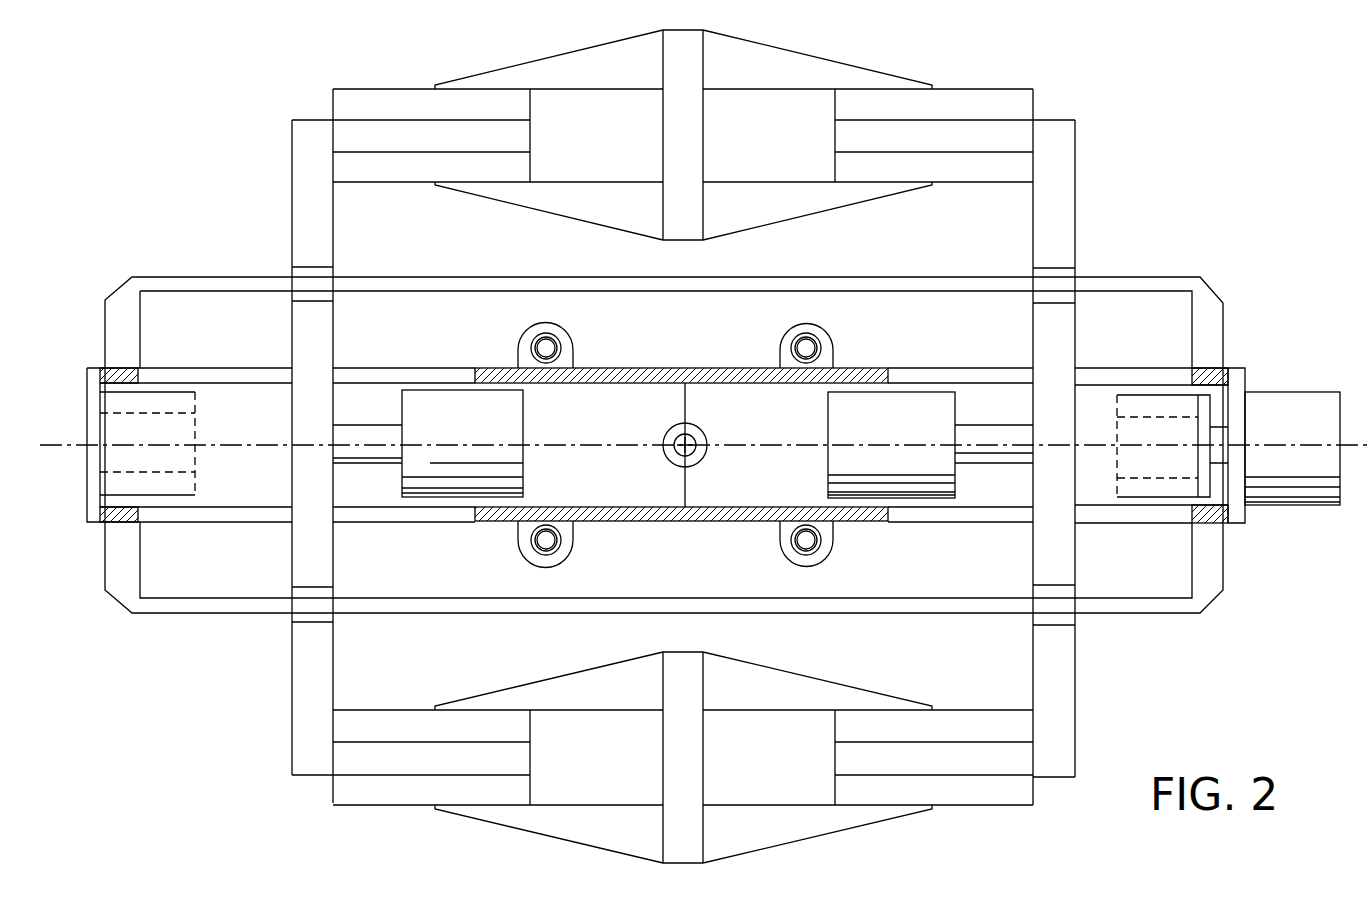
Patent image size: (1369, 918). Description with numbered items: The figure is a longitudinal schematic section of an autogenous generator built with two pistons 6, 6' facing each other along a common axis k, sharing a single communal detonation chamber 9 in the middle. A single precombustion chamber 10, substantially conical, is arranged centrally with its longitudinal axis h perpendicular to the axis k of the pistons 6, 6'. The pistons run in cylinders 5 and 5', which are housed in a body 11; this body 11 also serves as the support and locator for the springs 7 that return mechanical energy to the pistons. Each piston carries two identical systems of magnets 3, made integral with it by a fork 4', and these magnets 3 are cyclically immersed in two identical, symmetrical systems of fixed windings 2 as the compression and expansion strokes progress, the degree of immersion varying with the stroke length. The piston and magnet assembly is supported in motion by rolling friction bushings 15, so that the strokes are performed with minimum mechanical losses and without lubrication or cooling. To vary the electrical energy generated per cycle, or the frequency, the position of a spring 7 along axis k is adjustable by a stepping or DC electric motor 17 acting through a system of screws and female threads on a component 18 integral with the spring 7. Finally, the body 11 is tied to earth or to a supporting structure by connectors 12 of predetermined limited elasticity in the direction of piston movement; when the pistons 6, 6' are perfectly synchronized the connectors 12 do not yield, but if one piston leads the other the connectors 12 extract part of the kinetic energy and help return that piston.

The fixed windings 2 is at (587, 65).
The magnets 3 is at (360, 175).
The fork 4' is at (281, 446).
The cylinder 5 is at (1058, 428).
The cylinder 5' is at (287, 416).
The piston 6 is at (446, 443).
The piston 6' is at (901, 447).
The springs 7 is at (170, 405).
The communal detonation chamber 9 is at (595, 472).
The precombustion chamber 10 is at (705, 430).
The body 11 is at (657, 377).
The connector 12 is at (532, 347).
The rolling friction bushings 15 is at (1077, 273).
The electric motor 17 is at (1307, 417).
The component 18 is at (1223, 462).
The longitudinal axis h is at (673, 453).
The axis of pistons k is at (704, 430).